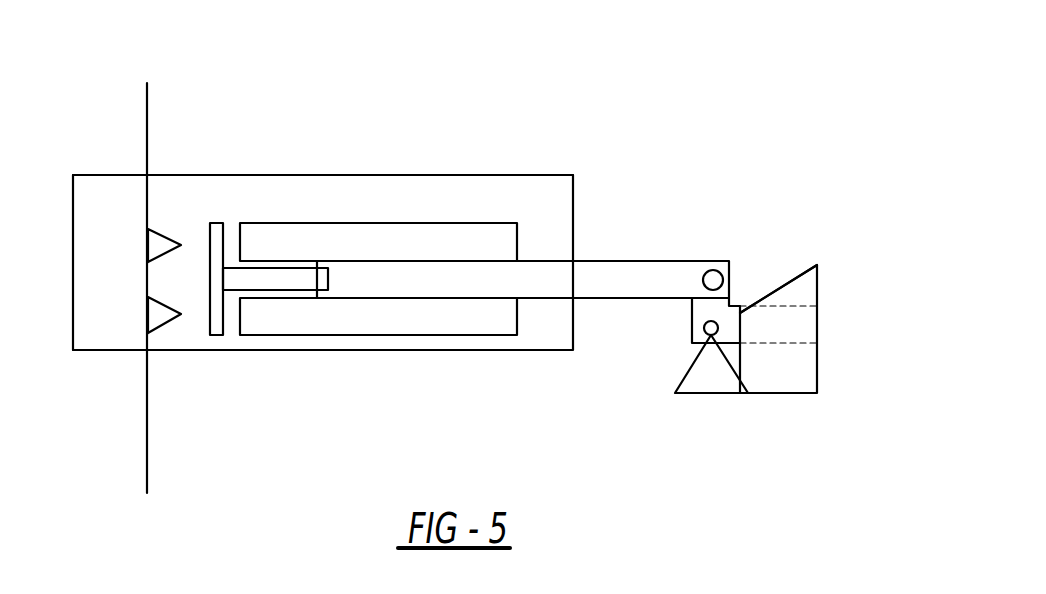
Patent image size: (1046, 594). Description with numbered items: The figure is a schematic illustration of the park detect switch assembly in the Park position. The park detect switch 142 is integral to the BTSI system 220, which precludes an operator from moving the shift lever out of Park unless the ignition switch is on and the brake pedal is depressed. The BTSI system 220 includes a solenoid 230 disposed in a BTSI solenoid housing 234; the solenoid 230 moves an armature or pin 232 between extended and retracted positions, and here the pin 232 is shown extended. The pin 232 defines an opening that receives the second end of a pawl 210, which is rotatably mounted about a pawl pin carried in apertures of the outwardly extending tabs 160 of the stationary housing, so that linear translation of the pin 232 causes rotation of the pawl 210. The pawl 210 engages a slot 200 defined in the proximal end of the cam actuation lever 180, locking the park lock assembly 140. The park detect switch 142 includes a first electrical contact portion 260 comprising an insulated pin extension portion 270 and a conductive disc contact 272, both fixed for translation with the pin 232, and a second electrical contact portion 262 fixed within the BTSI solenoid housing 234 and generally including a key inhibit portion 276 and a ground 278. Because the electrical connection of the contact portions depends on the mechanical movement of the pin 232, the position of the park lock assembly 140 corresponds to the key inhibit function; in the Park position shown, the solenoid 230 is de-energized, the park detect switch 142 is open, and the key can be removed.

The park lock assembly 140 is at (819, 140).
The park detect switch 142 is at (185, 124).
The outwardly extending tabs 160 is at (712, 377).
The cam actuation lever 180 is at (783, 375).
The slot 200 is at (803, 305).
The pawl 210 is at (777, 327).
The BTSI system 220 is at (484, 104).
The solenoid 230 is at (447, 237).
The pin 232 is at (633, 270).
The BTSI solenoid housing 234 is at (375, 175).
The first electrical contact portion 260 is at (236, 366).
The second electrical contact portion 262 is at (182, 368).
The insulated pin extension portion 270 is at (298, 278).
The conductive disc contact 272 is at (219, 232).
The key inhibit portion 276 is at (148, 242).
The ground 278 is at (150, 318).